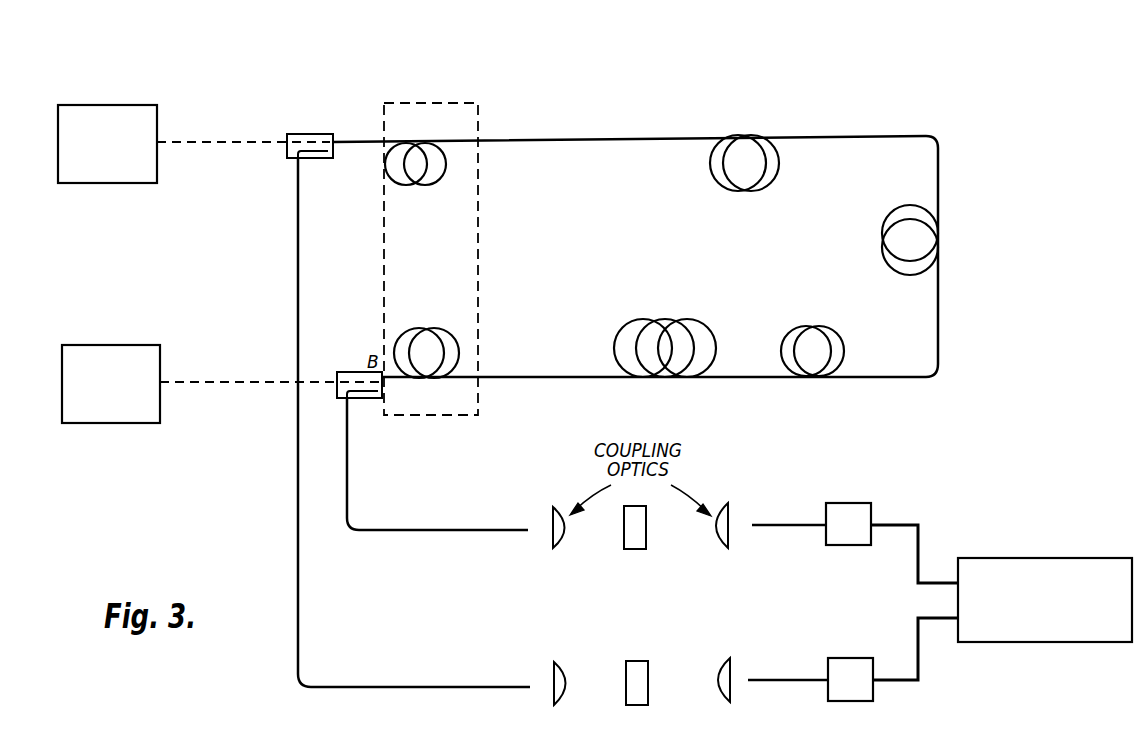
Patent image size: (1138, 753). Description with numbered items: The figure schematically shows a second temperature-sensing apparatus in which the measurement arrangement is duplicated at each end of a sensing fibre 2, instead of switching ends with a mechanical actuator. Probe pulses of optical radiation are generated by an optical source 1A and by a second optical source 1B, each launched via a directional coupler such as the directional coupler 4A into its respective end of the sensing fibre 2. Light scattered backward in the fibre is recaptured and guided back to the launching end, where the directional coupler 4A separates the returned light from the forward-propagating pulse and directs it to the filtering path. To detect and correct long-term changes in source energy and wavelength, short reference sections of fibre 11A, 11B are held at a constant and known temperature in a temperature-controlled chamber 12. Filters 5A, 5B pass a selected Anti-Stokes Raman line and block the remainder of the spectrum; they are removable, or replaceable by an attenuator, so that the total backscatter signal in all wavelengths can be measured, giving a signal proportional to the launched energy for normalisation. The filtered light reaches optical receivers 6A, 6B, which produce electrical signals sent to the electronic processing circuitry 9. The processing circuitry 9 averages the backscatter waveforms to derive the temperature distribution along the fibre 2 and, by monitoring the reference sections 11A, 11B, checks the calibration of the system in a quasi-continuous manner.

The optical source 1A is at (118, 183).
The optical source 1B is at (118, 423).
The directional coupler 4A is at (300, 134).
The sensing fibre 2 is at (897, 118).
The temperature-controlled chamber 12 is at (518, 93).
The reference section of fibre 11A is at (440, 177).
The reference section of fibre 11B is at (447, 331).
The optical filter 5A is at (620, 540).
The optical filter 5B is at (623, 669).
The optical receiver 6A is at (860, 548).
The optical receiver 6B is at (866, 704).
The electronic processing circuitry 9 is at (1103, 642).